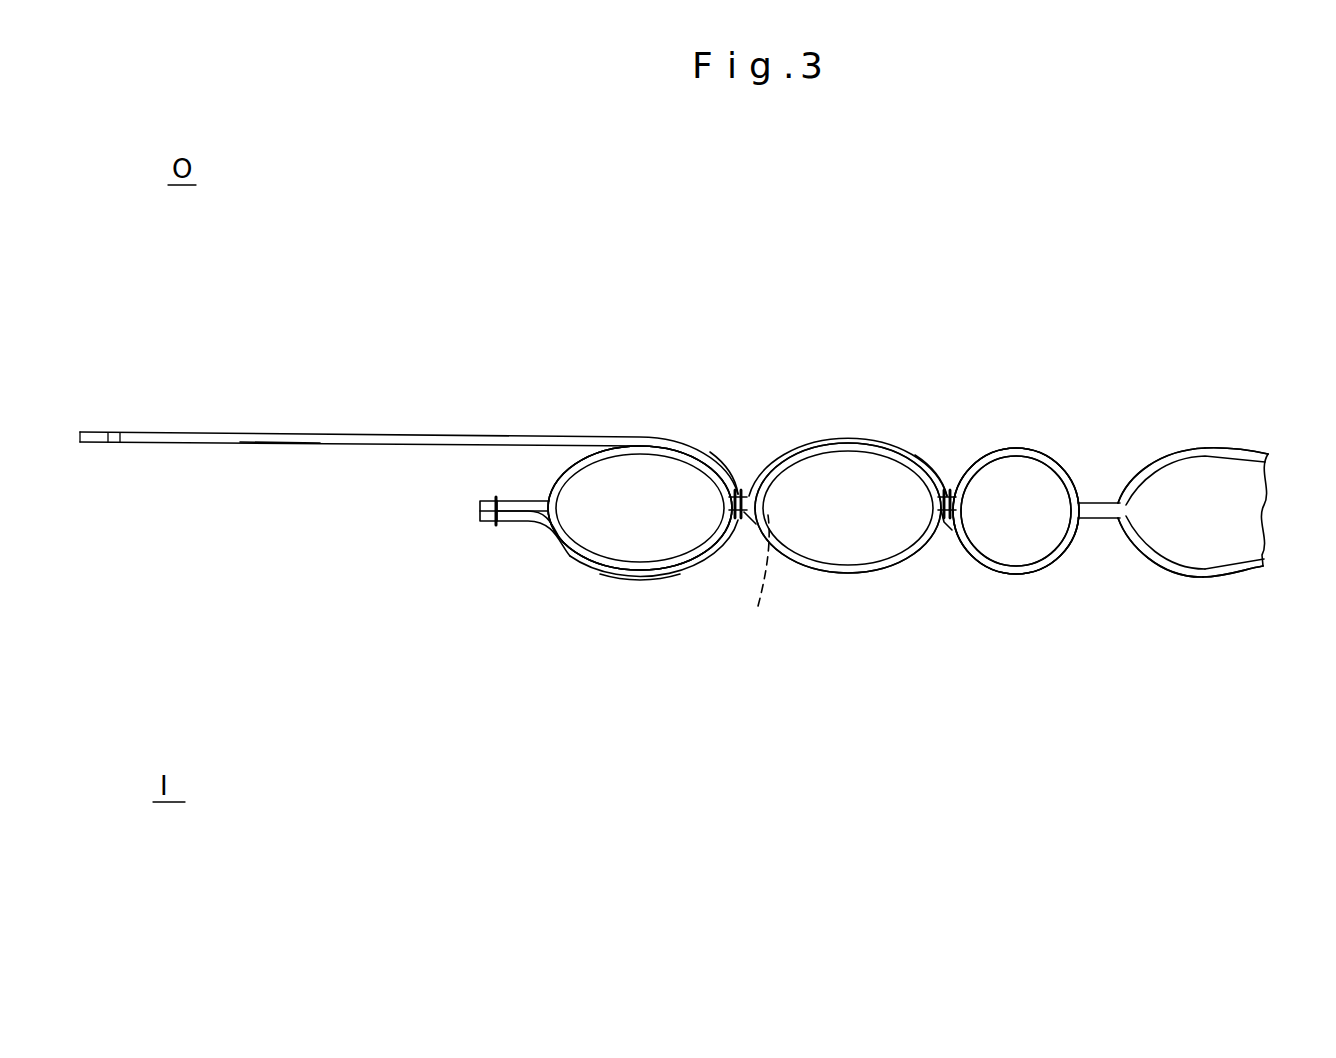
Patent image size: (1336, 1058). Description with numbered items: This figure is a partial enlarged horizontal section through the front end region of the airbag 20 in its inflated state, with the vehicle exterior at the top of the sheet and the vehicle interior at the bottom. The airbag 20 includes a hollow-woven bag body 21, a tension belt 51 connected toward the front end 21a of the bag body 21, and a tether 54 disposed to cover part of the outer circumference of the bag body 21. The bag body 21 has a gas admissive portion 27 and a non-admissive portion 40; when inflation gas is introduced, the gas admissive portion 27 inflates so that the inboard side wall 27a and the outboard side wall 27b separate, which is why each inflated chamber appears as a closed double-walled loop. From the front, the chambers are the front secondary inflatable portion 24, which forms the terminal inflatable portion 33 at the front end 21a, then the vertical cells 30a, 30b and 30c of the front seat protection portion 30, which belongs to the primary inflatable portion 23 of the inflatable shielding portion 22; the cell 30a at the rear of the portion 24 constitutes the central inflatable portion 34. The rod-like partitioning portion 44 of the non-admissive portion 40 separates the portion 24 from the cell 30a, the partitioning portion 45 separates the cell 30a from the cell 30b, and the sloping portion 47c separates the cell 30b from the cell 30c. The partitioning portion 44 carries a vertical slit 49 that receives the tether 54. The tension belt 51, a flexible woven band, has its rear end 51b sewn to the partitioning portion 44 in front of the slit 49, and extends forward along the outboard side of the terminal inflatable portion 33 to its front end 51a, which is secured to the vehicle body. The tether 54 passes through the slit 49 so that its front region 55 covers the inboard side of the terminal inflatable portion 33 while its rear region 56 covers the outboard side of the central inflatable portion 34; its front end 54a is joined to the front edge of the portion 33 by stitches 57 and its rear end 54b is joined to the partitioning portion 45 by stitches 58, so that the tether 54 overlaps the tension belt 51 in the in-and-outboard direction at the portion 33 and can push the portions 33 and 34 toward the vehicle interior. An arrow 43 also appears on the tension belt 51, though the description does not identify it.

The airbag 20 is at (1287, 296).
The bag body 21 is at (1189, 633).
The inflatable shielding portion 22 is at (1235, 512).
The front end 21a is at (488, 524).
The primary inflatable portion 23 is at (1016, 511).
The front secondary inflatable portion 24 is at (642, 464).
The gas admissive portion 27 is at (813, 510).
The inboard side wall 27a is at (1222, 576).
The outboard side wall 27b is at (1197, 447).
The front seat protection portion 30 is at (1034, 594).
The vertical cell 30a is at (858, 564).
The vertical cell 30b is at (1022, 464).
The vertical cell 30c is at (1160, 563).
The terminal inflatable portion 33 is at (640, 508).
The central inflatable portion 34 is at (848, 508).
The non-admissive portion 40 is at (842, 504).
The outer side 43 is at (276, 473).
The partitioning portion 44 is at (752, 498).
The partitioning portion 45 is at (940, 562).
The sloping portion 47c is at (1096, 502).
The slit 49 is at (754, 580).
The tension belt 51 is at (354, 418).
The front end 51a is at (148, 445).
The rear end 51b is at (740, 488).
The tether 54 is at (590, 595).
The front end 54a is at (506, 523).
The rear end 54b is at (944, 488).
The front region 55 is at (640, 582).
The rear region 56 is at (877, 435).
The stitches 57 is at (480, 505).
The stitches 58 is at (956, 562).